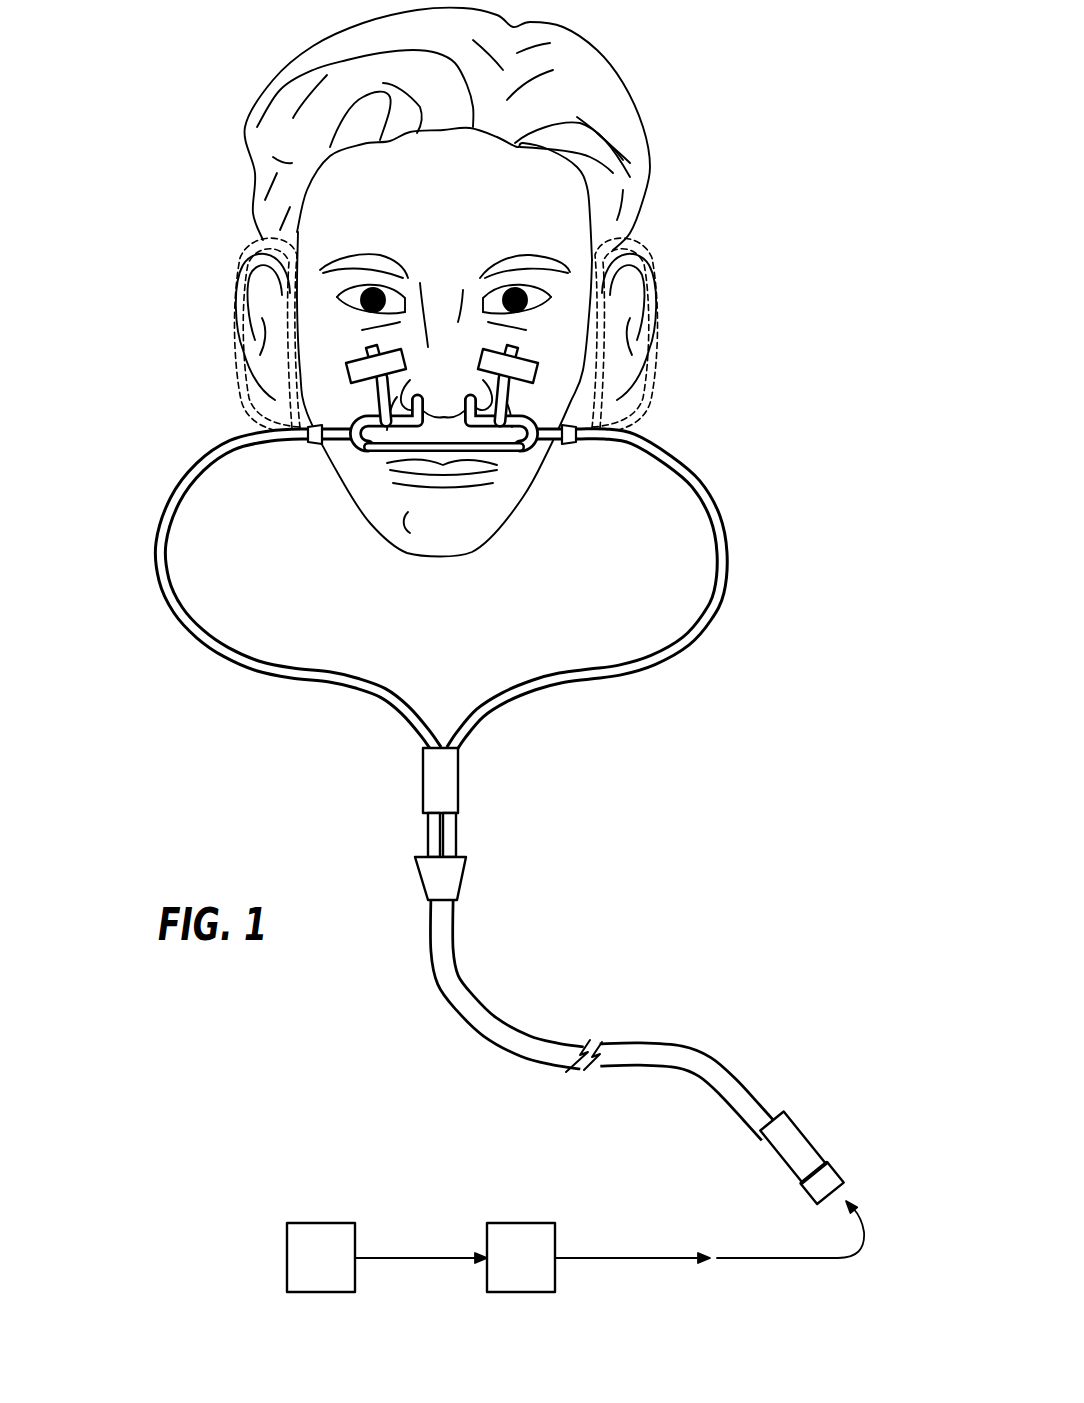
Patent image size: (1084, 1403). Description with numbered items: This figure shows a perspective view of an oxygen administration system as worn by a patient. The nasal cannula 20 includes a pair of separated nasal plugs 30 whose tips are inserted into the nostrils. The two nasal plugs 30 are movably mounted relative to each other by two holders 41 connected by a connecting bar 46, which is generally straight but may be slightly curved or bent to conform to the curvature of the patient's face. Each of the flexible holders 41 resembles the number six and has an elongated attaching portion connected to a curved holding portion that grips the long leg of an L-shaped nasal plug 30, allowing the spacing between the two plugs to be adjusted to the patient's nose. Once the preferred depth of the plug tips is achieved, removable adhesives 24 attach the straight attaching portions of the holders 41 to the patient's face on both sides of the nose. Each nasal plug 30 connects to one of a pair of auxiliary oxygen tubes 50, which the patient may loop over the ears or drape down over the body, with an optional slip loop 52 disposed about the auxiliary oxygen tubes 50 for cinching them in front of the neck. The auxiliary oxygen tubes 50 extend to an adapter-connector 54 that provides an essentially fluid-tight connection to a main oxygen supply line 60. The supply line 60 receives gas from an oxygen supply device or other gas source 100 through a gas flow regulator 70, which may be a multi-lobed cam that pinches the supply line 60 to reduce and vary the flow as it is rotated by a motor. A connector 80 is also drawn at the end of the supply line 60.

The nasal cannula 20 is at (488, 690).
The removable adhesives 24 is at (347, 370).
The nasal plugs 30 is at (387, 448).
The holders 41 is at (362, 398).
The connecting bar 46 is at (425, 451).
The auxiliary oxygen tubes 50 is at (183, 635).
The slip loop 52 is at (460, 782).
The adapter-connector 54 is at (430, 876).
The main oxygen supply line 60 is at (505, 1056).
The terminal connector 80 is at (780, 1160).
The gas flow regulator 70 is at (503, 1272).
The gas source 100 is at (343, 1272).